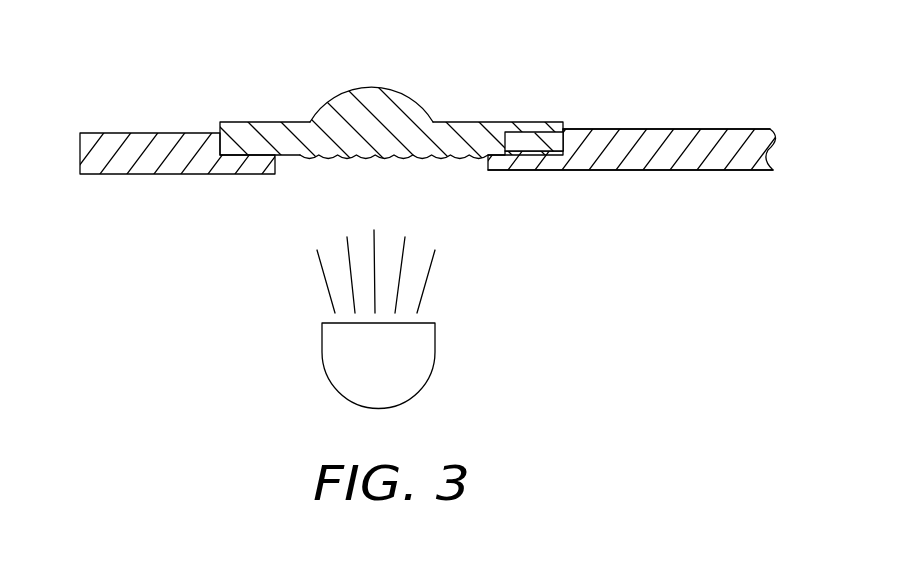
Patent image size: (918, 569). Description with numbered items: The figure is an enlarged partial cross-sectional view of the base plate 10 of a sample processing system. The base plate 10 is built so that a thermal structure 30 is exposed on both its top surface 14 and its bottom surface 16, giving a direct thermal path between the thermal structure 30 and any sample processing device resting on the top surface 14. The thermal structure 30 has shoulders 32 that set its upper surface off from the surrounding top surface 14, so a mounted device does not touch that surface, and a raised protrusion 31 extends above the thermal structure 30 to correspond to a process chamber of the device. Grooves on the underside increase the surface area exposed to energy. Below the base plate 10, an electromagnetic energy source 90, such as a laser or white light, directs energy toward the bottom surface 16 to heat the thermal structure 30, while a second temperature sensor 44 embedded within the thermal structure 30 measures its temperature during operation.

The base plate 10 is at (728, 140).
The top surface 14 is at (663, 128).
The bottom surface 16 is at (650, 173).
The thermal structure 30 is at (383, 94).
The raised protrusions 31 is at (390, 90).
The shoulders 32 is at (218, 126).
The second temperature sensor 44 is at (533, 140).
The electromagnetic energy source 90 is at (437, 360).